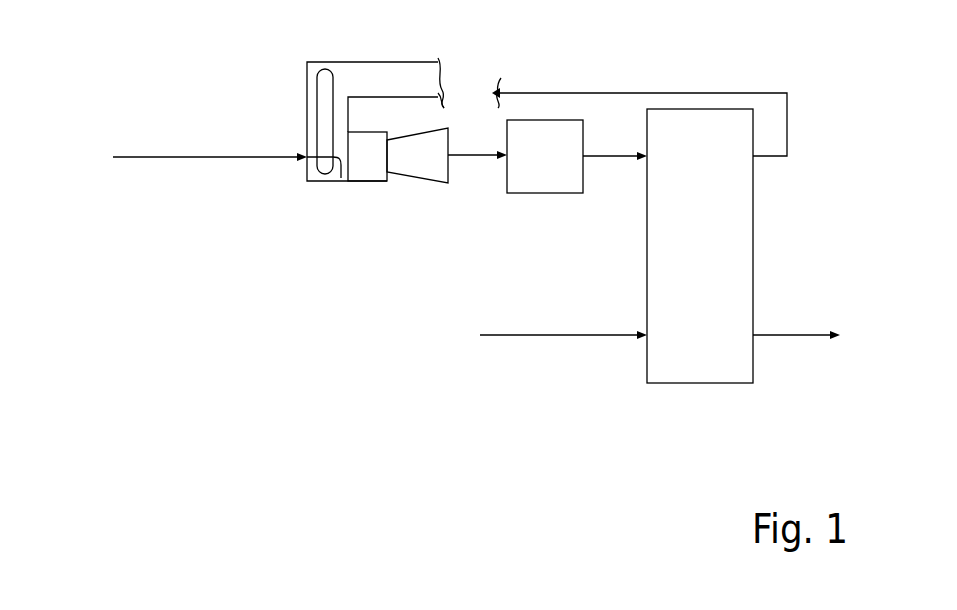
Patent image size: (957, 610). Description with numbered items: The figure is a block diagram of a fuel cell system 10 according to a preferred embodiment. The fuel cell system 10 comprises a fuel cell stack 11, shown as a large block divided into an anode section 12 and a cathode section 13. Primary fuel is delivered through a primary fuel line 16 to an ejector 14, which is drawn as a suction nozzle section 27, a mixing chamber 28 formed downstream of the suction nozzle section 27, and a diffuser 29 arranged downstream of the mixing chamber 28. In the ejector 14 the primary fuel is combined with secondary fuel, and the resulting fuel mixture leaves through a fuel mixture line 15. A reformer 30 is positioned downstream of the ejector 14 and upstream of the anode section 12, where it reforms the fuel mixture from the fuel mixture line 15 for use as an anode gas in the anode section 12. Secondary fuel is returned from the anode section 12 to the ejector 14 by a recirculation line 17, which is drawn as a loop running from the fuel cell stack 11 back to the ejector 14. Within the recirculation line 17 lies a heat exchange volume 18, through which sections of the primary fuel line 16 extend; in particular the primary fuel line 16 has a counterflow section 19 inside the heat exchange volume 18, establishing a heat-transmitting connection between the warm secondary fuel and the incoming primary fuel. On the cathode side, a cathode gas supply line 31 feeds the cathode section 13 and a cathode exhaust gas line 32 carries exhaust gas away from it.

The fuel cell system 10 is at (124, 58).
The fuel cell stack 11 is at (786, 234).
The anode section 12 is at (716, 177).
The cathode section 13 is at (716, 355).
The ejector 14 is at (384, 234).
The fuel mixture line 15 is at (477, 160).
The primary fuel line 16 is at (225, 160).
The recirculation line 17 is at (280, 68).
The heat exchange volume 18 is at (342, 60).
The counterflow section 19 is at (312, 108).
The suction nozzle section 27 is at (335, 180).
The mixing chamber 28 is at (357, 183).
The diffuser 29 is at (415, 177).
The reformer 30 is at (561, 172).
The cathode gas supply line 31 is at (540, 335).
The cathode exhaust gas line 32 is at (803, 337).